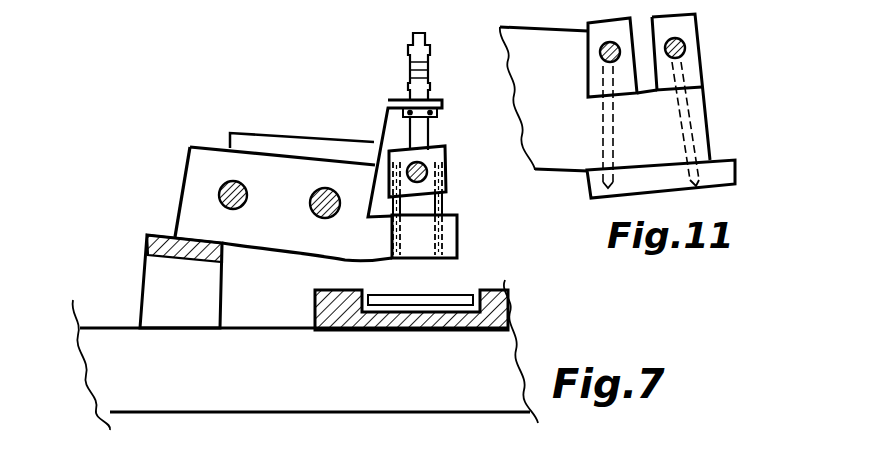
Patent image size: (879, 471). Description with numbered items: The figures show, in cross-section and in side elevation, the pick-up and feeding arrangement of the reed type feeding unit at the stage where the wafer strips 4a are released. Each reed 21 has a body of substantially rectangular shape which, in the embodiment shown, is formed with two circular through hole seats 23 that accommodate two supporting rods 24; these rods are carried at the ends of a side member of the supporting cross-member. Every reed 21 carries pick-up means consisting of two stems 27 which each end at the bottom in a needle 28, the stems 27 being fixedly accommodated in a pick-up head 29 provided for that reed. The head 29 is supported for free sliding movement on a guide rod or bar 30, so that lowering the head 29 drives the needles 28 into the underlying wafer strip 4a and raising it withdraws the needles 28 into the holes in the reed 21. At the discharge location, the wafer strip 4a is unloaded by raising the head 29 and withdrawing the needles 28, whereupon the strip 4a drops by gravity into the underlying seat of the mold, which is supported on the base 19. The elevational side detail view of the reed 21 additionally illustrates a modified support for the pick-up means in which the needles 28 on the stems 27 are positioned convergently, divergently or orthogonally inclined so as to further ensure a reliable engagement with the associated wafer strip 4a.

In FIG. 7, the machine bed 19 is at (183, 400).
In FIG. 11, the reed 21 is at (708, 120).
In FIG. 7, the circular through hole seats 23 is at (235, 167).
In FIG. 7, the supporting rods 24 is at (220, 197).
In FIG. 7, the stems 27 is at (440, 207).
In FIG. 11, the stems 27 is at (703, 73).
In FIG. 7, the needle 28 is at (459, 252).
In FIG. 11, the needle 28 is at (607, 183).
In FIG. 7, the pick-up head 29 is at (447, 157).
In FIG. 7, the guide rod or bar 30 is at (425, 163).
In FIG. 7, the wafer strips 4a is at (372, 292).
In FIG. 11, the wafer strips 4a is at (727, 175).